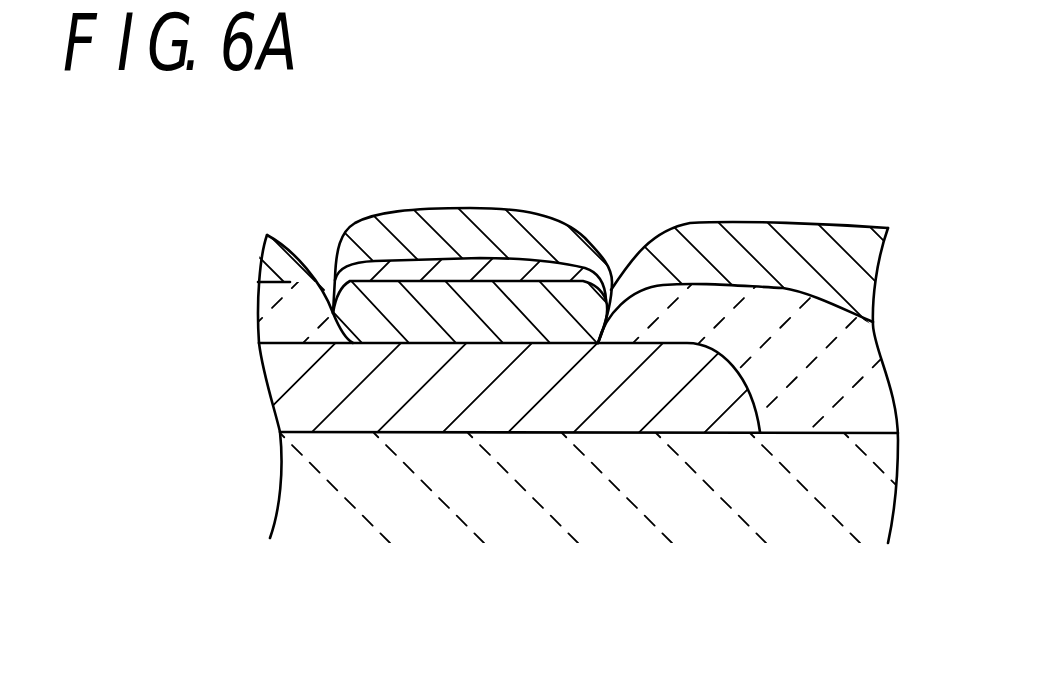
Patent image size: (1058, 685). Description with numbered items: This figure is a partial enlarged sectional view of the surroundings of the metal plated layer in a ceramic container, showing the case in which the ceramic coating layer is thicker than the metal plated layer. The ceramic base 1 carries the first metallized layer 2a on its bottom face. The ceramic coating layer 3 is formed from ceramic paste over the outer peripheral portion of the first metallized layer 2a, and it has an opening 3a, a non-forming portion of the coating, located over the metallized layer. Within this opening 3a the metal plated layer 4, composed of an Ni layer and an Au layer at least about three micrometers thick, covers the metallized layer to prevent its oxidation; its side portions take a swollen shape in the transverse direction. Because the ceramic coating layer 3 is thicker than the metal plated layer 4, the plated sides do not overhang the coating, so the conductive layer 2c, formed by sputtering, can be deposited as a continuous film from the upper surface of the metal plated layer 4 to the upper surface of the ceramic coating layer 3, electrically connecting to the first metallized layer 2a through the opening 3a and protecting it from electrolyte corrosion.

The ceramic base 1 is at (690, 500).
The first metallized layer 2a is at (407, 387).
The conductive layer 2c is at (607, 282).
The ceramic coating layer 3 is at (857, 356).
The opening 3a is at (348, 315).
The metal plated layer 4 is at (498, 267).